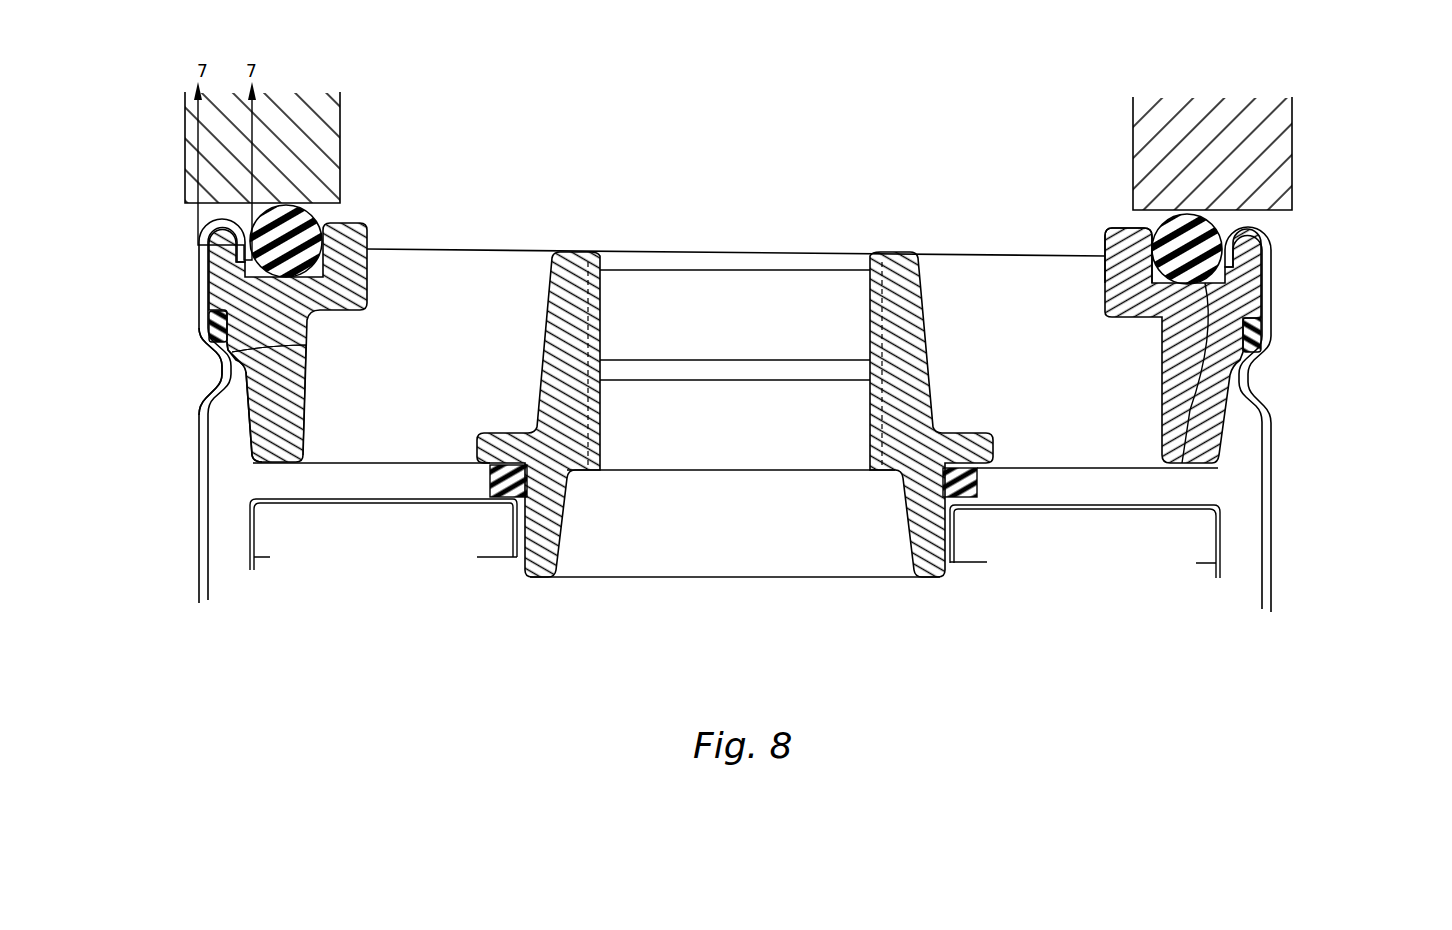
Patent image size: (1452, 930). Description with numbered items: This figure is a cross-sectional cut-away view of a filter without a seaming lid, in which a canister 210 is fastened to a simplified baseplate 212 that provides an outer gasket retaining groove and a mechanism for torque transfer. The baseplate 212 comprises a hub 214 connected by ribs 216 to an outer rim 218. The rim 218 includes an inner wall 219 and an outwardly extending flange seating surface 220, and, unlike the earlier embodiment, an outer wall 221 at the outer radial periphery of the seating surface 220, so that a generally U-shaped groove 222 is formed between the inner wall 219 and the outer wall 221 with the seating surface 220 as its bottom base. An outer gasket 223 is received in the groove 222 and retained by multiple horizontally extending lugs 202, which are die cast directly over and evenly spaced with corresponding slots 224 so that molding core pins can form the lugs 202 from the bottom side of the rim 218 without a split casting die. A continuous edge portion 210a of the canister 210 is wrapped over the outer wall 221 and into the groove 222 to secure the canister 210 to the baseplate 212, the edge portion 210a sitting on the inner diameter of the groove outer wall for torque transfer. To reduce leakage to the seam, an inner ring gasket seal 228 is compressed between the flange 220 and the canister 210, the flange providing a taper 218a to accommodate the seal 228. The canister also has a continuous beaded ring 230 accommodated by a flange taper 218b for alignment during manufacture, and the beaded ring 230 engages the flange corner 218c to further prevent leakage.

The retaining lug 202 is at (1154, 238).
The canister 210 is at (1322, 546).
The continuous edge portion of the canister 210a is at (205, 222).
The baseplate 212 is at (829, 598).
The hub 214 is at (600, 430).
The ribs 216 is at (735, 478).
The outer rim 218 is at (313, 317).
The flange taper 218a is at (232, 358).
The flange taper 218b is at (247, 450).
The flange corner 218c is at (263, 349).
The inner wall 219 is at (1147, 262).
The flange seating surface 220 is at (1197, 362).
The outer wall 221 is at (1228, 277).
The U-shaped groove 222 is at (291, 104).
The outer gasket 223 is at (309, 215).
The slot 224 is at (1273, 262).
The inner ring gasket seal 228 is at (215, 320).
The continuous beaded ring 230 is at (221, 381).